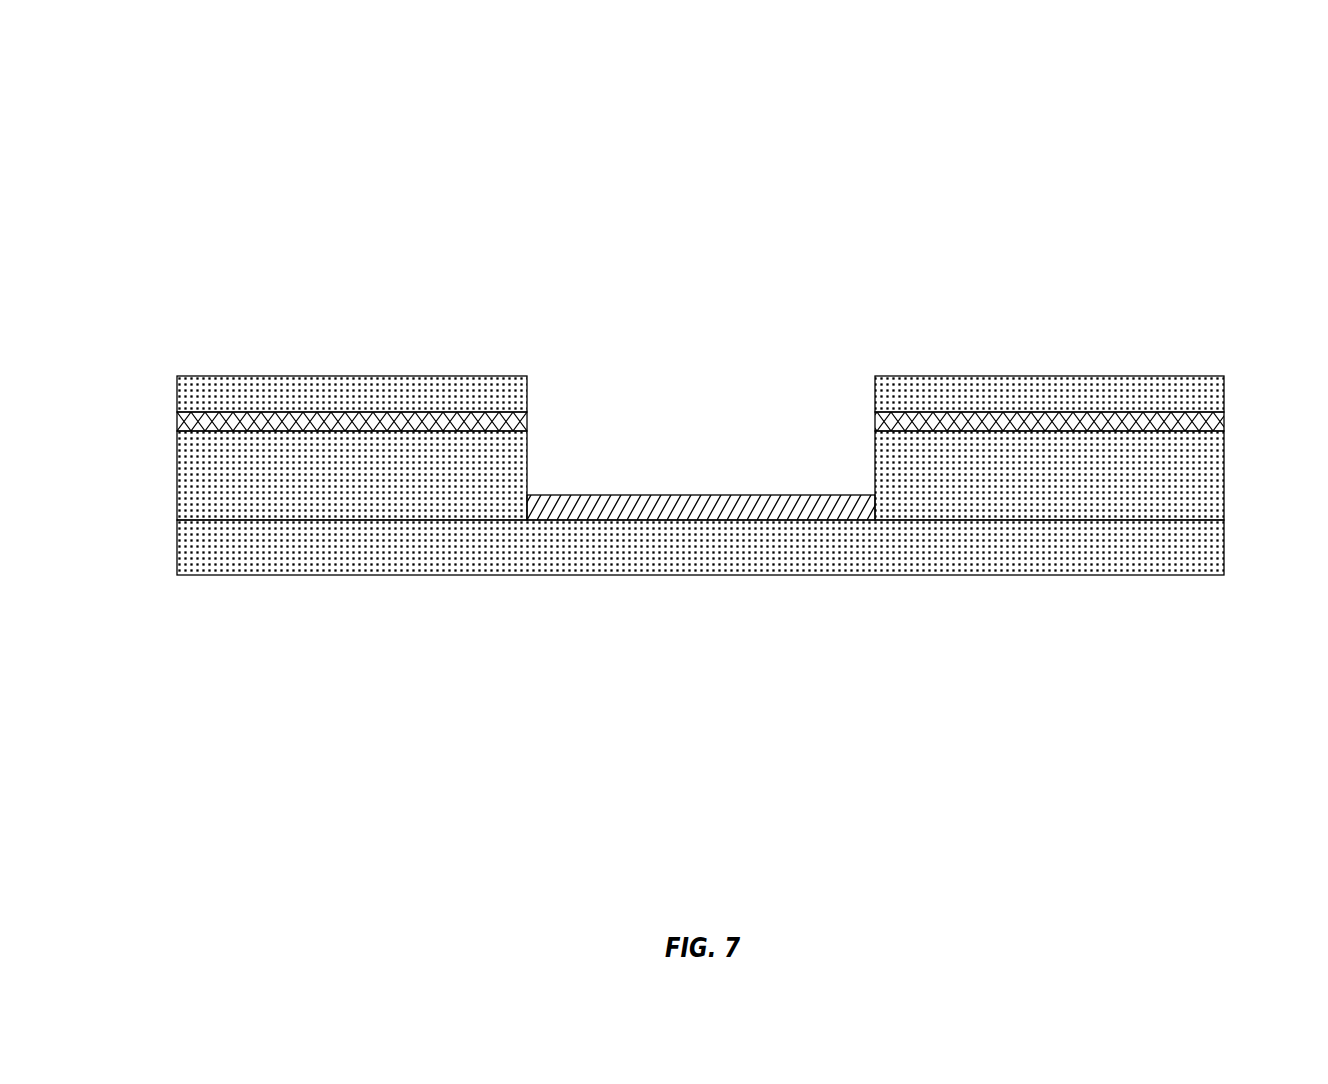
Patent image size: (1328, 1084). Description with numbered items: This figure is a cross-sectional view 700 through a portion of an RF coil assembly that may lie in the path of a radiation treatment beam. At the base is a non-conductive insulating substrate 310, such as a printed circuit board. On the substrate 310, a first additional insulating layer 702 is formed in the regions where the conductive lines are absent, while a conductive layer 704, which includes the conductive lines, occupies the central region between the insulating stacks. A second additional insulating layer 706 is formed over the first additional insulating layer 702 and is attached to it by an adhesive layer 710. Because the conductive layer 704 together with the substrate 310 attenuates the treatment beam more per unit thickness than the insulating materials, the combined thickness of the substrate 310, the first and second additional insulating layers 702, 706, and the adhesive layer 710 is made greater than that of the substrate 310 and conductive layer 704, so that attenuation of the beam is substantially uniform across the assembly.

The semiconductor structure 700 is at (201, 121).
The substrate 310 is at (910, 577).
The first additional insulating layer 702 is at (177, 498).
The conductive layer 704 is at (713, 498).
The second additional insulating layer 706 is at (177, 397).
The adhesive layer 710 is at (177, 424).